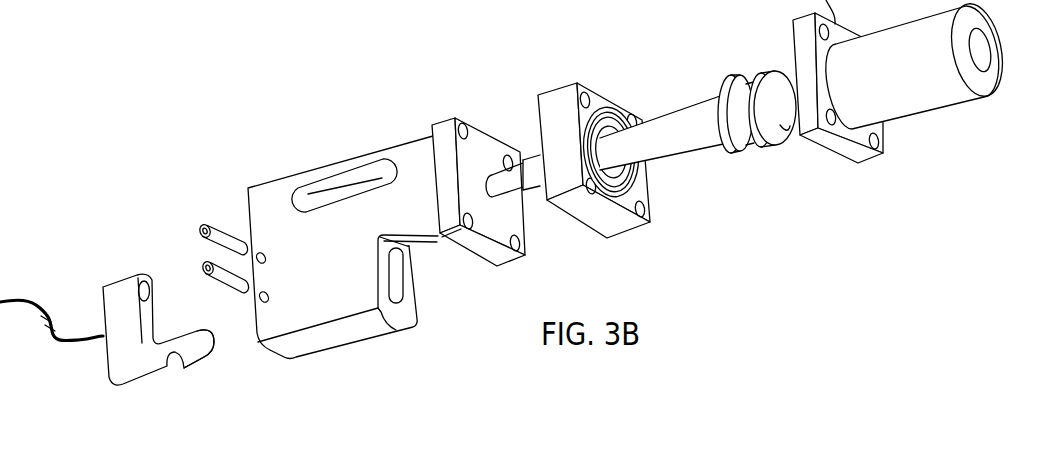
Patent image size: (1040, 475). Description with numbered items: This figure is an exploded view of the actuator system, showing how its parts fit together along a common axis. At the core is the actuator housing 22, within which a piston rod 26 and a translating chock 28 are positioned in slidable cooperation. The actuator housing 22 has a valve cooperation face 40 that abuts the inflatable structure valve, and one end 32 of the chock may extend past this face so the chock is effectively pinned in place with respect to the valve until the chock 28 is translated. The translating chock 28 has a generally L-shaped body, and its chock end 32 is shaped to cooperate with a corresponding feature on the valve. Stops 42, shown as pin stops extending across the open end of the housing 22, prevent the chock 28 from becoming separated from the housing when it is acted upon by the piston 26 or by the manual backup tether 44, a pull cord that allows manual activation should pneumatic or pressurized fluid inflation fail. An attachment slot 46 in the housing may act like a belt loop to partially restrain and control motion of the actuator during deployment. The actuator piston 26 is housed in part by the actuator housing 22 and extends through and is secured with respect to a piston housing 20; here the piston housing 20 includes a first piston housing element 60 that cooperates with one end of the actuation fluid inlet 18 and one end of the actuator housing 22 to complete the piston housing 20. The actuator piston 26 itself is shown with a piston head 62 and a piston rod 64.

The actuation fluid inlet 18 is at (922, 100).
The piston housing 20 is at (481, 124).
The actuator housing 22 is at (302, 176).
The piston rod 26 is at (663, 121).
The translating chock 28 is at (147, 374).
The chock end 32 is at (211, 349).
The valve cooperation face 40 is at (435, 279).
The stops 42 is at (268, 258).
The manual backup tether 44 is at (42, 300).
The attachment slot 46 is at (372, 190).
The first piston housing element 60 is at (558, 107).
The piston head 62 is at (783, 128).
The piston rod 64 is at (683, 145).